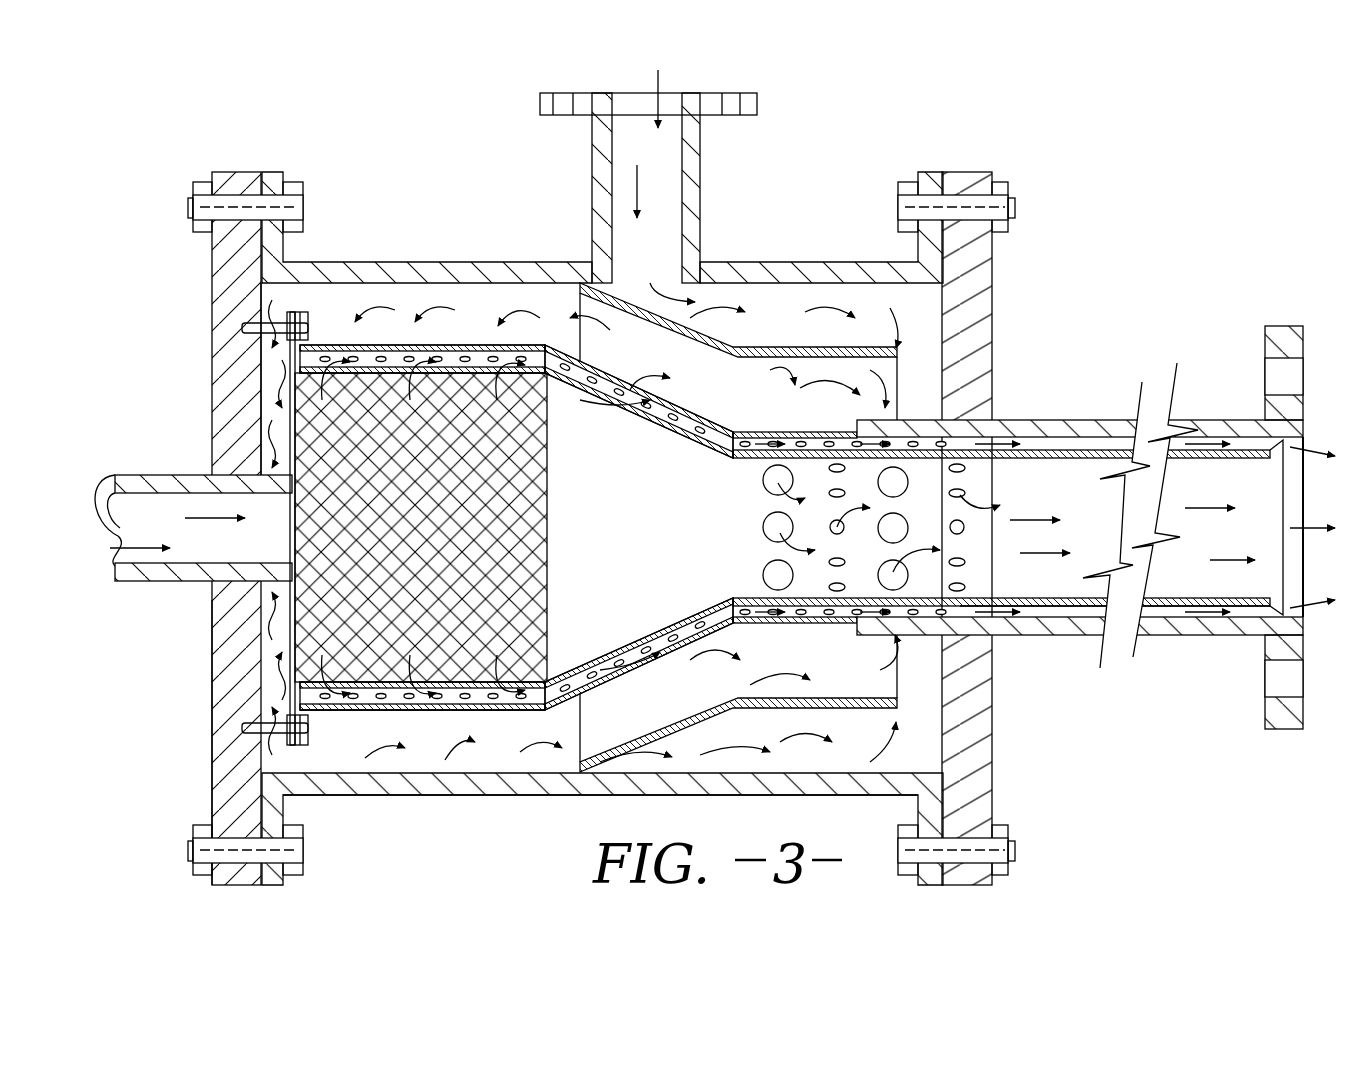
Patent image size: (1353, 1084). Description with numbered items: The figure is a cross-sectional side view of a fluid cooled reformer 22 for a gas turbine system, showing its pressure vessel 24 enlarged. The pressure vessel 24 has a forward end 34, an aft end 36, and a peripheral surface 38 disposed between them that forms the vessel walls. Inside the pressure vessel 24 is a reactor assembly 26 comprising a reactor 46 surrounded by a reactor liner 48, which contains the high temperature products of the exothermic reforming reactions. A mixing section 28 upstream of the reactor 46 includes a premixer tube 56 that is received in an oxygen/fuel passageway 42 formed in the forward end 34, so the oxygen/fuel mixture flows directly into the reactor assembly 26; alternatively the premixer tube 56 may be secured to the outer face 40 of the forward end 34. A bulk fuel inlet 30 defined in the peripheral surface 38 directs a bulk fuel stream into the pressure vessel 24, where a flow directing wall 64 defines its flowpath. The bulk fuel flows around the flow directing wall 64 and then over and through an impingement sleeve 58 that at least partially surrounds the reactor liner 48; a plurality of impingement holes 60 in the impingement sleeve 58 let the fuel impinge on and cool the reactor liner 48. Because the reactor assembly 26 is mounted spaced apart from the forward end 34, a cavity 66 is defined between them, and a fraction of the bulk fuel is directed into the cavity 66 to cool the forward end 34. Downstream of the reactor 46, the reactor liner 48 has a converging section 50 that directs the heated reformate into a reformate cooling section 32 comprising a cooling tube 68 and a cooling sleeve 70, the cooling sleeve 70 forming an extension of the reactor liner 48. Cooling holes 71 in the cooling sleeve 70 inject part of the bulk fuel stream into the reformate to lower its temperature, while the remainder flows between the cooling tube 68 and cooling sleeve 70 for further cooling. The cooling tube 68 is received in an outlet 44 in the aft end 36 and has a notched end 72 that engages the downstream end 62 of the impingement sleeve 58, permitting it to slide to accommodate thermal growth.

The fluid cooled reformer 22 is at (739, 514).
The pressure vessel 24 is at (358, 262).
The reactor assembly 26 is at (435, 525).
The mixing section 28 is at (193, 500).
The bulk fuel inlet 30 is at (680, 185).
The reformate cooling section 32 is at (1096, 527).
The forward end 34 is at (205, 528).
The aft end 36 is at (995, 528).
The peripheral surface 38 is at (558, 795).
The outer face 40 is at (212, 615).
The oxygen/fuel passageway 42 is at (240, 468).
The outlet 44 is at (966, 637).
The reactor 46 is at (482, 395).
The reactor liner 48 is at (422, 752).
The converging section 50 is at (608, 640).
The premixer tube 56 is at (182, 585).
The impingement sleeve 58 is at (373, 713).
The impingement holes 60 is at (632, 383).
The downstream end 62 is at (1008, 572).
The flow directing wall 64 is at (715, 333).
The cavity 66 is at (267, 683).
The cooling tube 68 is at (1088, 428).
The cooling sleeve 70 is at (1058, 613).
The cooling holes 71 is at (766, 528).
The notched end 72 is at (883, 640).